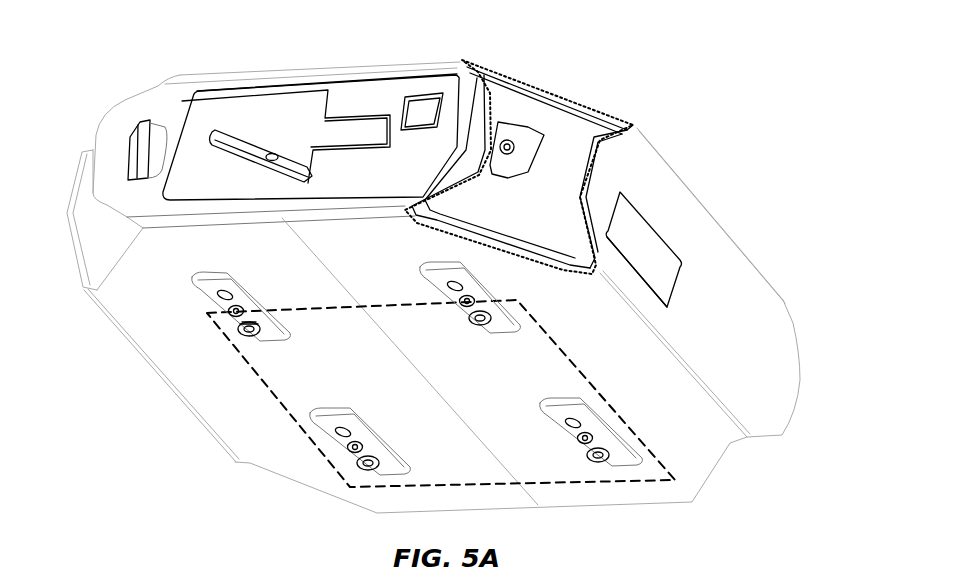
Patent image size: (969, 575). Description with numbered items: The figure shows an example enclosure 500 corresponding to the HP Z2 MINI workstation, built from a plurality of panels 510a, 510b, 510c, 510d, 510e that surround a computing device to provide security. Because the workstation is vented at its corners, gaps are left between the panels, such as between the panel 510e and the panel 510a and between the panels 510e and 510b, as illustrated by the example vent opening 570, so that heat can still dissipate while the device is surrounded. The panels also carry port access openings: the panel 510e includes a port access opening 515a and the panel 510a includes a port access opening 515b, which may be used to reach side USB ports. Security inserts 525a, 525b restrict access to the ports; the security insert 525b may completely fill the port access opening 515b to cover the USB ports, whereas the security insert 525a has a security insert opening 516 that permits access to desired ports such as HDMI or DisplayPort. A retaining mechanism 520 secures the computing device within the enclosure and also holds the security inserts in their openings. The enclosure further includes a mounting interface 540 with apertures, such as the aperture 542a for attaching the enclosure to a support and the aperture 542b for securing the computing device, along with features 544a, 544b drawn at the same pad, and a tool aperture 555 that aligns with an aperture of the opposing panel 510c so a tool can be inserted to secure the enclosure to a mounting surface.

The enclosure 500 is at (718, 122).
The panel 510a is at (730, 260).
The panel 510b is at (80, 180).
The panel 510c is at (542, 103).
The panel 510d is at (183, 380).
The panel 510e is at (475, 80).
The port access opening 515a is at (290, 82).
The port access opening 515b is at (672, 292).
The security insert opening 516 is at (219, 100).
The retaining mechanism 520 is at (150, 120).
The security insert 525a is at (377, 90).
The security insert 525b is at (628, 208).
The mounting interface 540 is at (337, 467).
The aperture 542a is at (264, 334).
The aperture 542b is at (247, 310).
The first boss 544a is at (240, 332).
The second boss 544b is at (235, 312).
The tool aperture 555 is at (227, 298).
The vent opening 570 is at (613, 117).